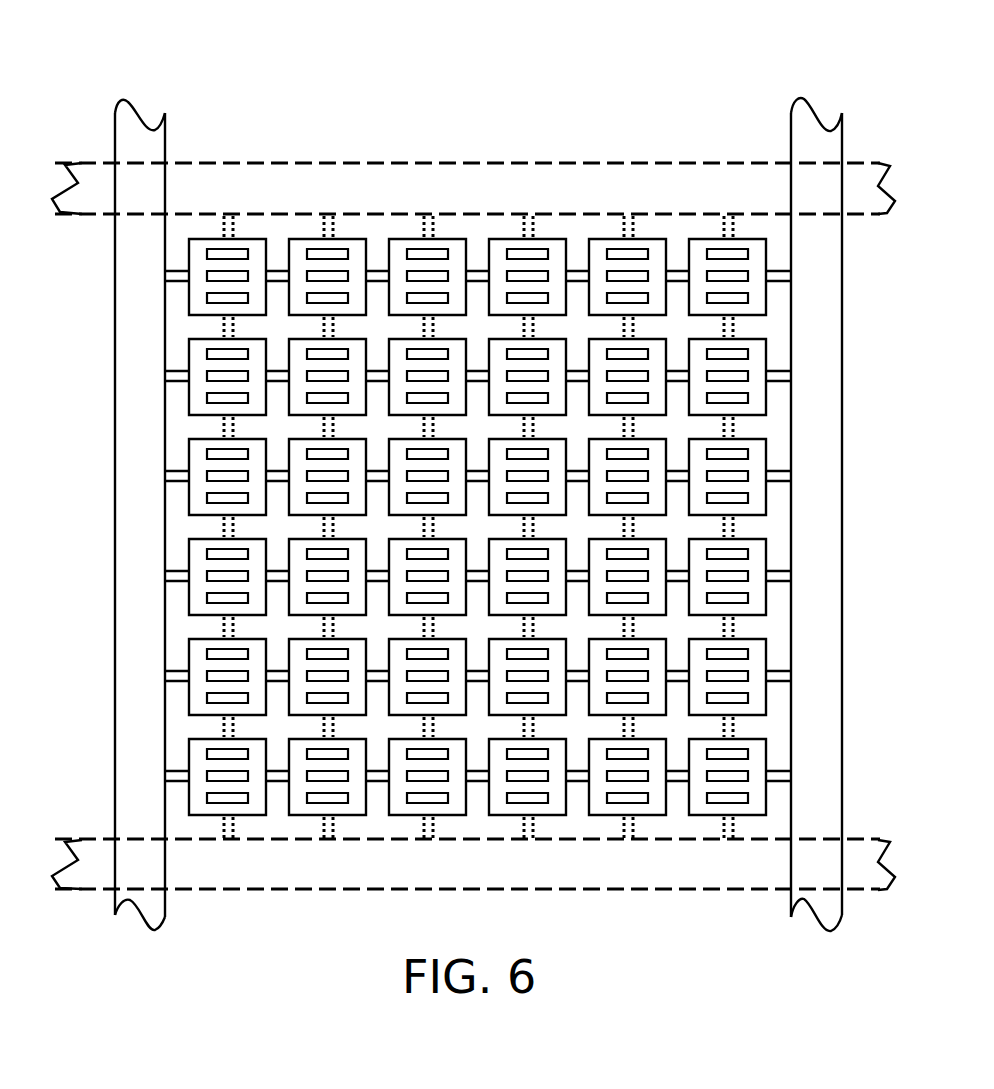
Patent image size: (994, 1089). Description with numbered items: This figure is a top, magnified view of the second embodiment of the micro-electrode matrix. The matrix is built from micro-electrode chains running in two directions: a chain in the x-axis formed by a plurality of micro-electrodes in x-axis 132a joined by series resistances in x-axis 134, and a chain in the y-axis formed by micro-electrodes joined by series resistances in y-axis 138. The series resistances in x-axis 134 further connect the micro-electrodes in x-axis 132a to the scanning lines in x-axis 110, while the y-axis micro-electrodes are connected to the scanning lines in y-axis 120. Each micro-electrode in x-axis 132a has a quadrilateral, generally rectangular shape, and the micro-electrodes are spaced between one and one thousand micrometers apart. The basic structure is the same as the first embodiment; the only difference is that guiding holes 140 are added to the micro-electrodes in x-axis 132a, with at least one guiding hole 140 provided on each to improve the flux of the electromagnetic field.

The scanning lines in x-axis 110 is at (139, 106).
The scanning lines in y-axis 120 is at (640, 161).
The micro-electrode in x-axis 132a is at (251, 232).
The series resistances in x-axis 134 is at (282, 260).
The series resistances in y-axis 138 is at (750, 228).
The guiding holes 140 is at (207, 298).